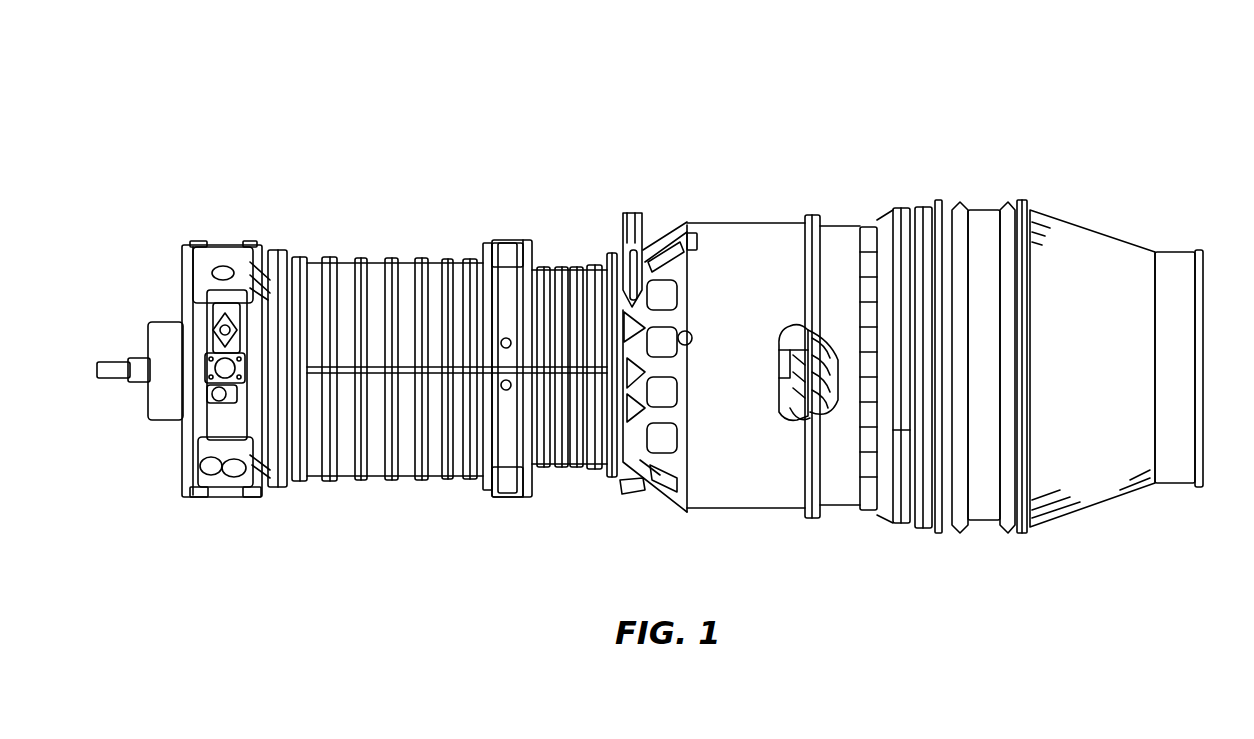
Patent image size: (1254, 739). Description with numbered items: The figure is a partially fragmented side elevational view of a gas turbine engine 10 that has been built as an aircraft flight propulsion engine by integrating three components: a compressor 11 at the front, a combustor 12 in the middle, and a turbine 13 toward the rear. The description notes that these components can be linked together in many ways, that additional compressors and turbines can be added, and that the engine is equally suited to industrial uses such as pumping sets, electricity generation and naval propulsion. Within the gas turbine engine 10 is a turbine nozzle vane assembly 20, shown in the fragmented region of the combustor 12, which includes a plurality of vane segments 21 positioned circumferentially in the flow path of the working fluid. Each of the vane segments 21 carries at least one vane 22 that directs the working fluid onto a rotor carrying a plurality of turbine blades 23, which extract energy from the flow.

The gas turbine engine 10 is at (1167, 58).
The compressor 11 is at (346, 256).
The combustor 12 is at (746, 222).
The turbine 13 is at (988, 208).
The turbine nozzle vane assembly 20 is at (790, 334).
The vane segments 21 is at (795, 378).
The vane 22 is at (800, 415).
The turbine blades 23 is at (822, 406).